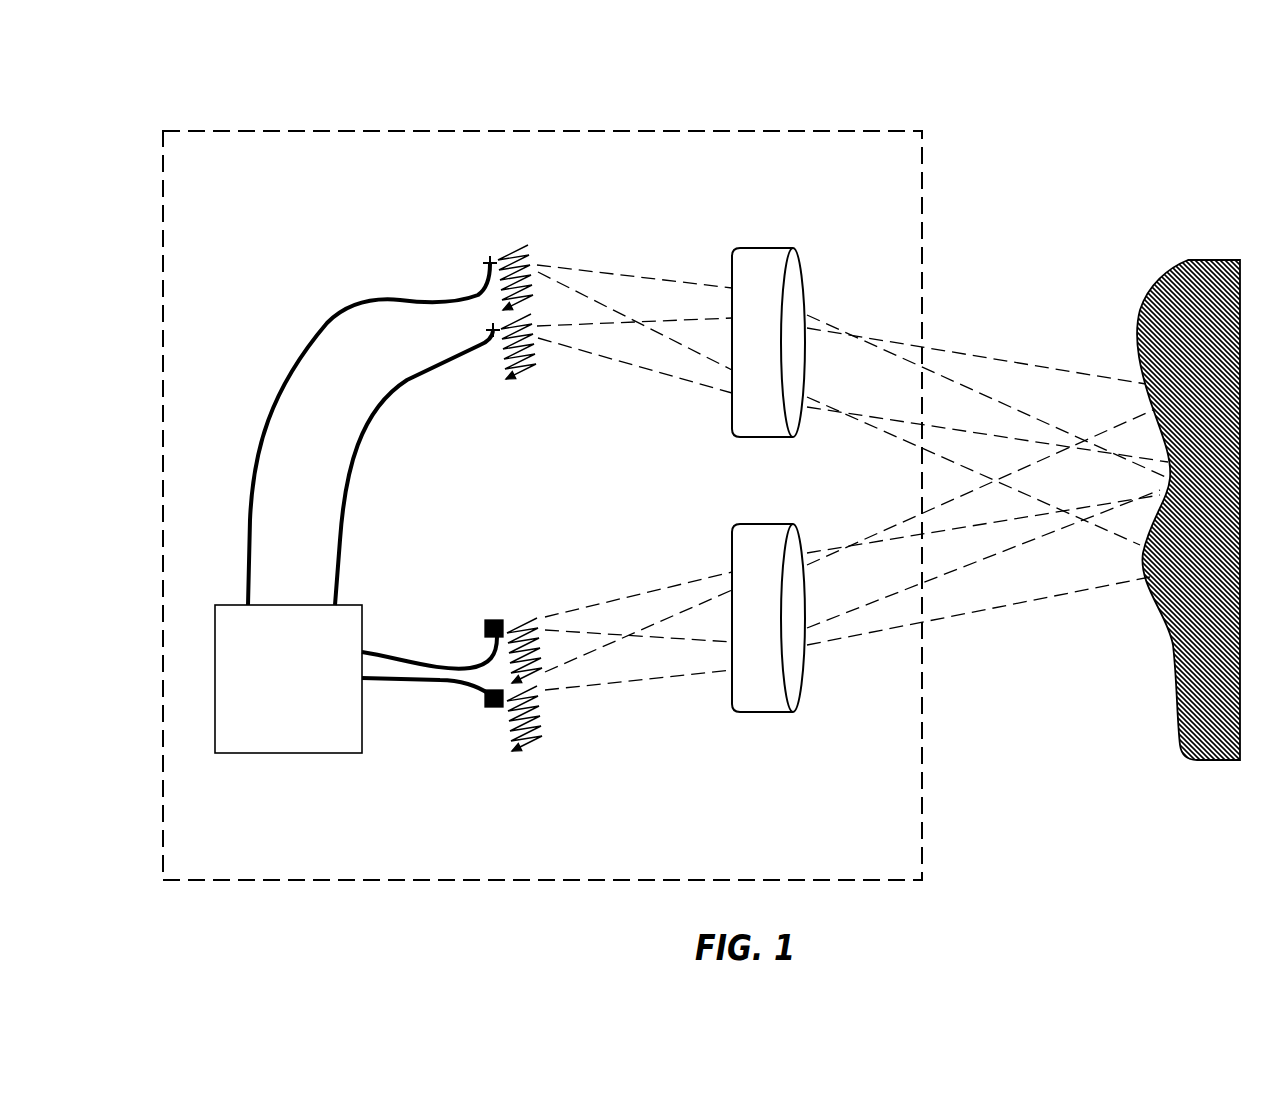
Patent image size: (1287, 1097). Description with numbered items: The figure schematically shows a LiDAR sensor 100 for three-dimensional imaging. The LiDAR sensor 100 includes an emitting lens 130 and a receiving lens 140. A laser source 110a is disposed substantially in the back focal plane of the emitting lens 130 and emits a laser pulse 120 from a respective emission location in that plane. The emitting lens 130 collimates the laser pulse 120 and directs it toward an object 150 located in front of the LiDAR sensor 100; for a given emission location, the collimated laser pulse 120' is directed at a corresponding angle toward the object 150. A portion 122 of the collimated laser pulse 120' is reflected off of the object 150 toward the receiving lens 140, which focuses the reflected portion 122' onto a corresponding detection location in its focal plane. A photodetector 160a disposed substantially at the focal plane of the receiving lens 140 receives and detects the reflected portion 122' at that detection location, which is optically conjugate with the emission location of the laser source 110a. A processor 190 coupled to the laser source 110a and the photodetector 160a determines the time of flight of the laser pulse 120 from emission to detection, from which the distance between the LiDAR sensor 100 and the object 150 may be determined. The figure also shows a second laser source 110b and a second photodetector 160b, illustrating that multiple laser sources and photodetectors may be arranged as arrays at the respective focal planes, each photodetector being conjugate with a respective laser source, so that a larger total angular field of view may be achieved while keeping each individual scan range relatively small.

The LiDAR sensor 100 is at (545, 128).
The laser source 110a is at (490, 255).
The second laser source 110b is at (493, 342).
The laser pulse 120 is at (634, 298).
The collimated laser pulse 120' is at (988, 412).
The portion of the collimated laser pulse 122 is at (983, 536).
The portion of the laser pulse reflected off of the object 122' is at (638, 609).
The emitting lens 130 is at (805, 292).
The receiving lens 140 is at (803, 688).
The object 150 is at (1183, 280).
The photodetector 160a is at (492, 620).
The second photodetector 160b is at (490, 707).
The processor 190 is at (283, 753).